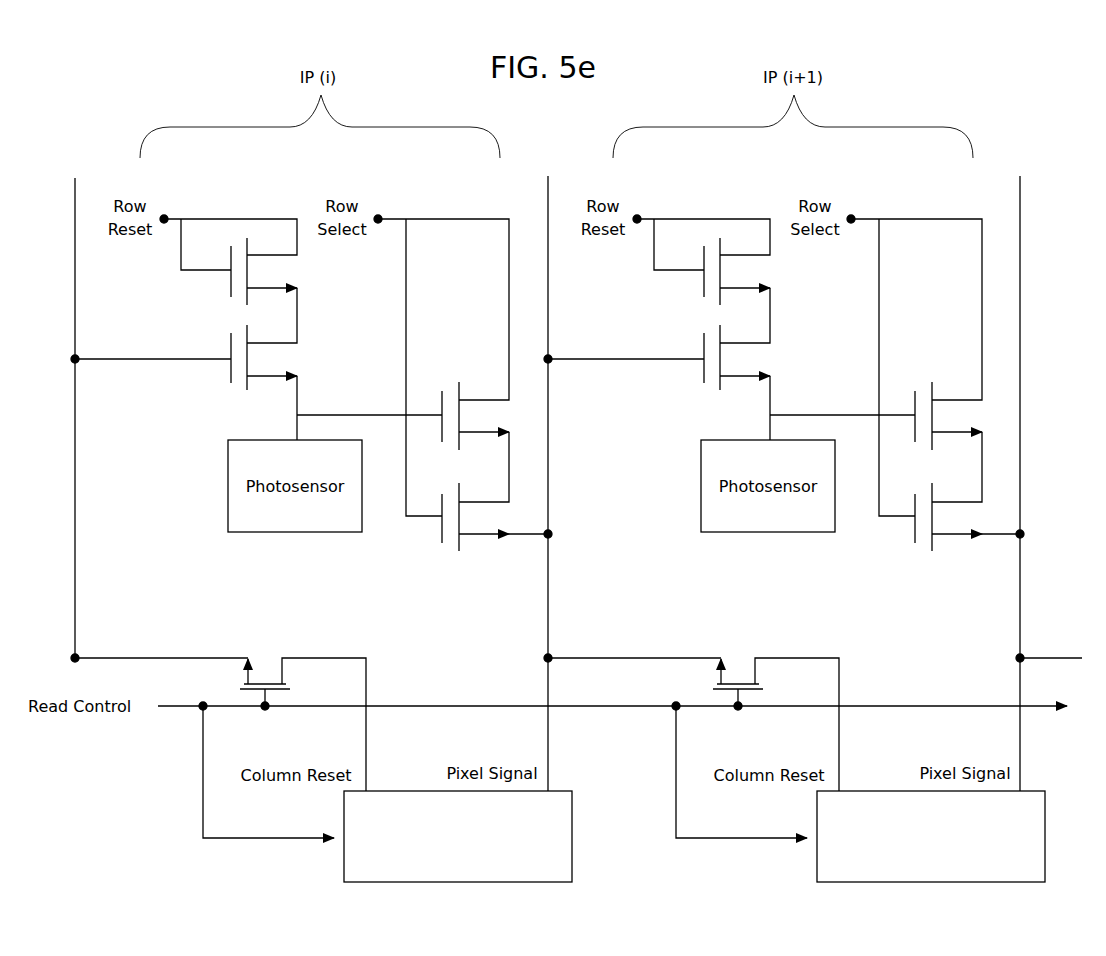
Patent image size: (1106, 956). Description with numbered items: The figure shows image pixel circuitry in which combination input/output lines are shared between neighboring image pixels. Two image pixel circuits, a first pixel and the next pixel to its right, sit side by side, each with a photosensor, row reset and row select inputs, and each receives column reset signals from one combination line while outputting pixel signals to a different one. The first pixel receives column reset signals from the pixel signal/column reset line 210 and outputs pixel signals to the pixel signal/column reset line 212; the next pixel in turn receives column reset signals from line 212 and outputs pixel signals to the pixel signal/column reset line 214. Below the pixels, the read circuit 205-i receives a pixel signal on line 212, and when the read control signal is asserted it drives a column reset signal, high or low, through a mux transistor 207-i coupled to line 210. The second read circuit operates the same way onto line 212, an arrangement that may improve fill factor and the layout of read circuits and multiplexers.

The pixel signal/column reset combination line 210 is at (109, 418).
The pixel signal/column reset combination line 212 is at (582, 483).
The pixel signal/column reset combination line 214 is at (1052, 483).
The mux transistor 207-i is at (303, 713).
The read circuit 205-i is at (458, 836).